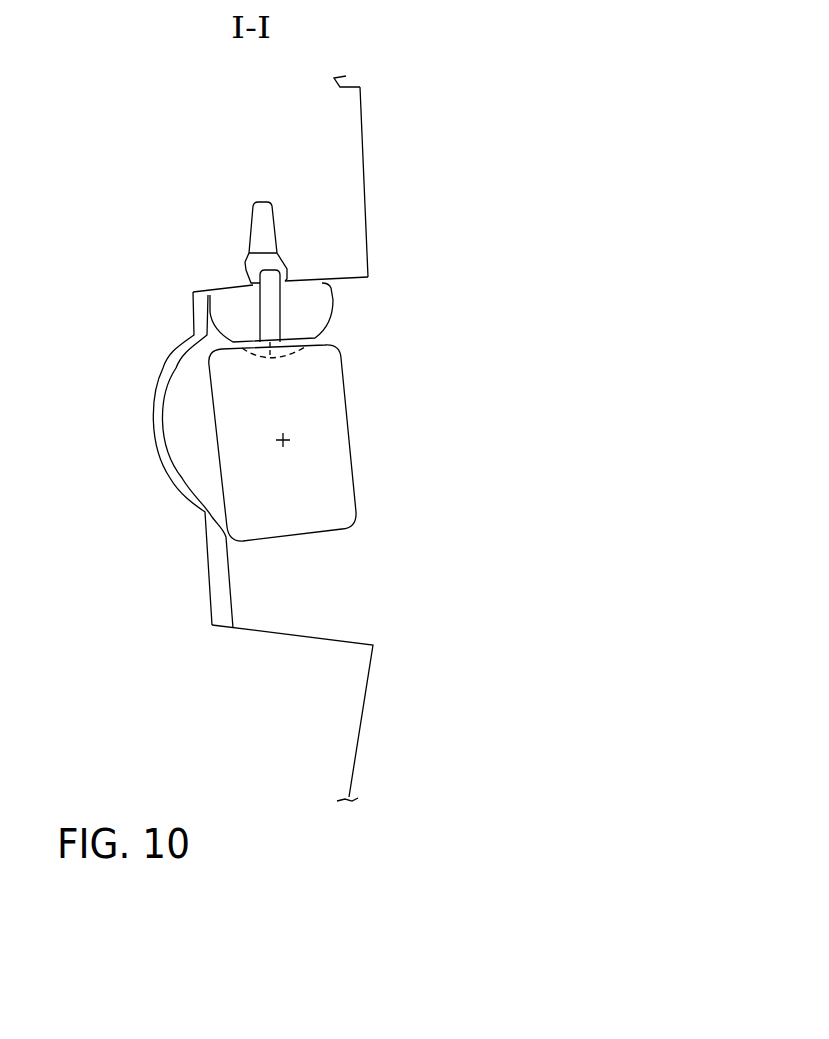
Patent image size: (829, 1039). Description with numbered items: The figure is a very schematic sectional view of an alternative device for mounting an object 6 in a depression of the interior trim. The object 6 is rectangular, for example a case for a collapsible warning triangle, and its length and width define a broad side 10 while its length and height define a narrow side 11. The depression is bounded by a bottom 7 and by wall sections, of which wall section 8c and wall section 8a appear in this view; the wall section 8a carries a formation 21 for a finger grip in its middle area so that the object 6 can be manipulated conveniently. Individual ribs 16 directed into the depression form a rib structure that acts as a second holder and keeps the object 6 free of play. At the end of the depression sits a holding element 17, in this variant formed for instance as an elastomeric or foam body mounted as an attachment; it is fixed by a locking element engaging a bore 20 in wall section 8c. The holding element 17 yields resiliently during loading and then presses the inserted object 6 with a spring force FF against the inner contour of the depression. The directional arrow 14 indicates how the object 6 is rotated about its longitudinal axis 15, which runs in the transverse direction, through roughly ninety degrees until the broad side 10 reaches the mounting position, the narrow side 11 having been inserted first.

The wall section 8c is at (348, 277).
The wall section 8a is at (302, 637).
The bottom 7 is at (208, 558).
The individual ribs 16 is at (229, 587).
The formation for a finger grip 21 is at (258, 633).
The holding element 17 is at (230, 310).
The directional arrow 14 is at (230, 250).
The bore 20 is at (231, 276).
The spring force FF is at (313, 285).
The broad side 10 is at (373, 422).
The longitudinal axis 15 is at (257, 430).
The object 6 is at (352, 490).
The narrow side 11 is at (322, 557).